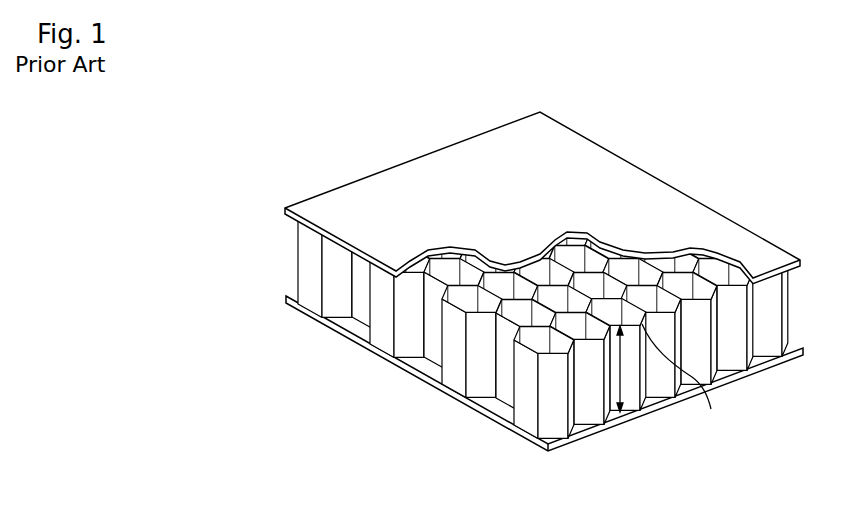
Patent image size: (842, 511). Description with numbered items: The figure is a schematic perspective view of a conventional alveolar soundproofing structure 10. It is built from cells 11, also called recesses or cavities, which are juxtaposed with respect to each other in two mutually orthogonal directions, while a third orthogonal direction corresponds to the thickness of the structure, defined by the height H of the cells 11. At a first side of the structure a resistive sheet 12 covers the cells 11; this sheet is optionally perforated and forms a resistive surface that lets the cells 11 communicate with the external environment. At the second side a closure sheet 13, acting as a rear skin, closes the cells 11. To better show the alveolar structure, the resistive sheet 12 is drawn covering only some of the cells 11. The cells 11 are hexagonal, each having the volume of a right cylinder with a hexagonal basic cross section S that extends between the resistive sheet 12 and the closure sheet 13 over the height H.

The alveolar soundproofing structure 10 is at (544, 267).
The cells 11 is at (566, 427).
The resistive sheet 12 is at (424, 158).
The closure sheet 13 is at (408, 376).
The height of the cells H is at (626, 369).
The hexagonal basic cross section S is at (680, 376).